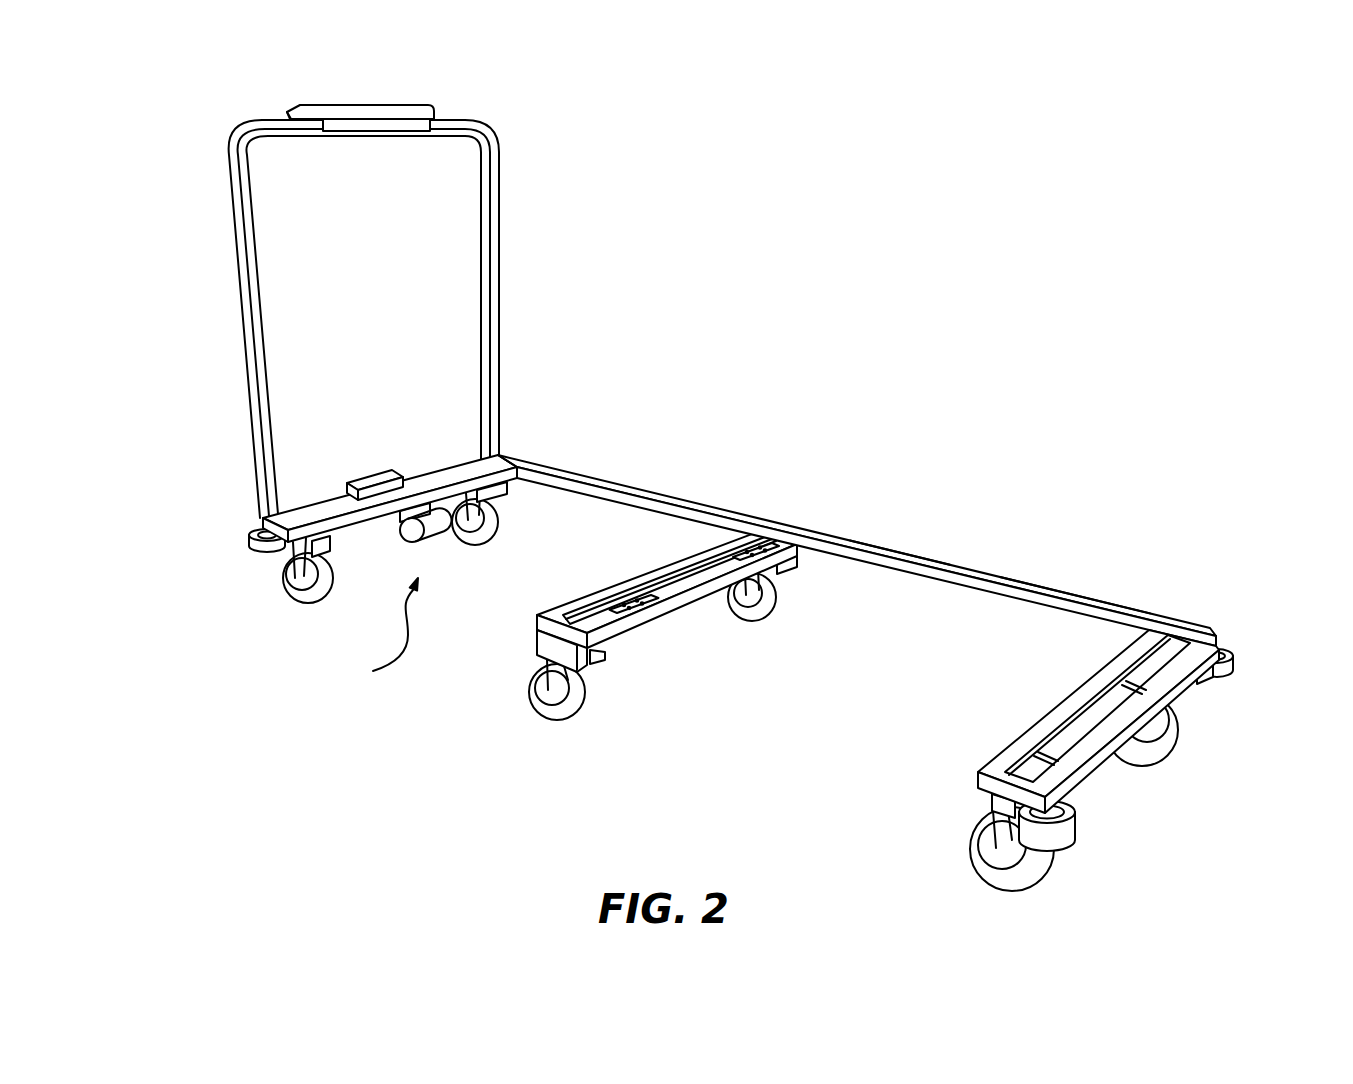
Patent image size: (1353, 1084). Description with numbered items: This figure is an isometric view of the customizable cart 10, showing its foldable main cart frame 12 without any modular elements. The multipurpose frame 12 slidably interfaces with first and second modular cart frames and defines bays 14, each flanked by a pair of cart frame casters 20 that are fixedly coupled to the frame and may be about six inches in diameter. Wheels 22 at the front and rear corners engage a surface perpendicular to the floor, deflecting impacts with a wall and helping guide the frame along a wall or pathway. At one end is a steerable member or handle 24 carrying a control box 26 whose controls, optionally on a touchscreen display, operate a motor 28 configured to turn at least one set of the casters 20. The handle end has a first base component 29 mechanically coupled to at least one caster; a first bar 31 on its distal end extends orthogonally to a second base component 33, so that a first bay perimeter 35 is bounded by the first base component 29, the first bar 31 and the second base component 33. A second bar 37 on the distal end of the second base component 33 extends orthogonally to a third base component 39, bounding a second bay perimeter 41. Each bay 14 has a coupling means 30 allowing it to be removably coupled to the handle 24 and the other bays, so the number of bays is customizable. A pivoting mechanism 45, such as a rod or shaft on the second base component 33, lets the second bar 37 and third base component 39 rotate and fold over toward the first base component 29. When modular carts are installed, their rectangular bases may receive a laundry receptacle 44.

The customizable cart 10 is at (208, 99).
The foldable main cart frame 12 is at (338, 303).
The bay 14 is at (842, 617).
The cart frame caster 20 is at (298, 577).
The wheel 22 is at (1067, 837).
The steerable member or handle 24 is at (238, 313).
The control box 26 is at (362, 106).
The motor 28 is at (480, 465).
The first base component 29 is at (422, 482).
The coupling means 30 is at (684, 559).
The first bar 31 is at (613, 486).
The second base component 33 is at (630, 598).
The first bay perimeter 35 is at (537, 464).
The second bar 37 is at (883, 550).
The third base component 39 is at (1134, 724).
The second bay perimeter 41 is at (1047, 588).
The laundry receptacle 44 is at (381, 634).
The pivoting mechanism 45 is at (778, 540).